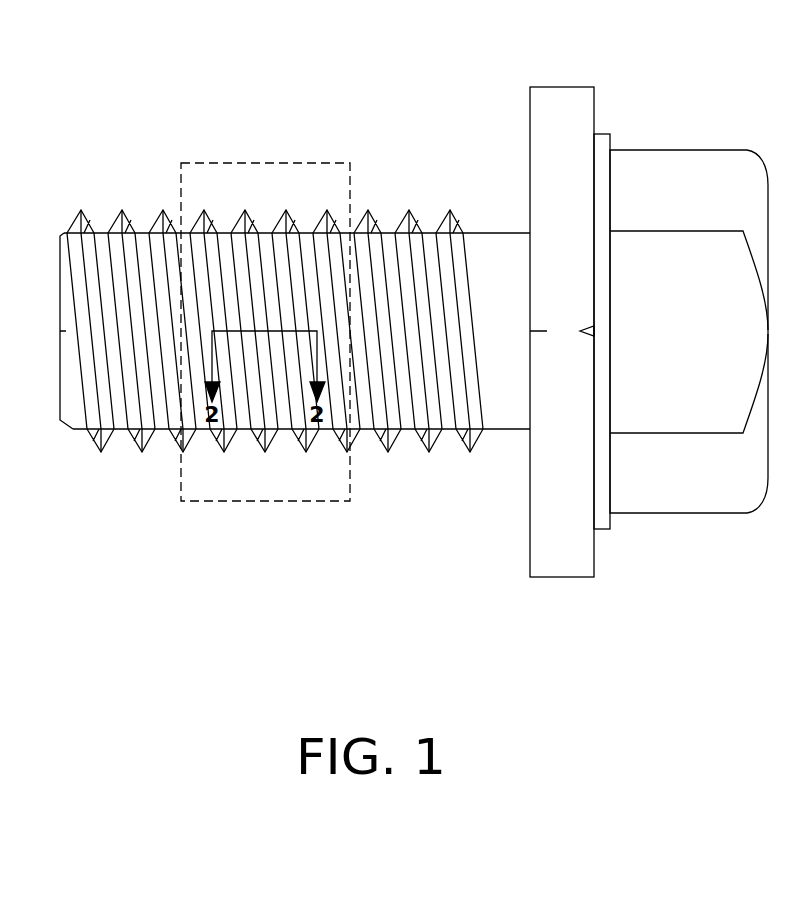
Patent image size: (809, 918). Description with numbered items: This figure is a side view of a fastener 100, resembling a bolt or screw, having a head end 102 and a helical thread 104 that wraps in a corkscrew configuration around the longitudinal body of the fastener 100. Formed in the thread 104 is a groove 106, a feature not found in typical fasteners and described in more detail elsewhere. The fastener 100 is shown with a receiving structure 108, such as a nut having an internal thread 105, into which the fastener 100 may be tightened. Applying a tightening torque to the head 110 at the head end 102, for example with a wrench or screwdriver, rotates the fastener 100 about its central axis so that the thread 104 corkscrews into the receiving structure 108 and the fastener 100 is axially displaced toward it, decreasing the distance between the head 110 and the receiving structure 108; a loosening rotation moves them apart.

The fastener 100 is at (247, 62).
The head end 102 is at (551, 47).
The helical thread 104 is at (449, 205).
The internal thread 105 is at (197, 203).
The groove 106 is at (101, 219).
The receiving structure 108 is at (338, 156).
The head 110 is at (586, 76).